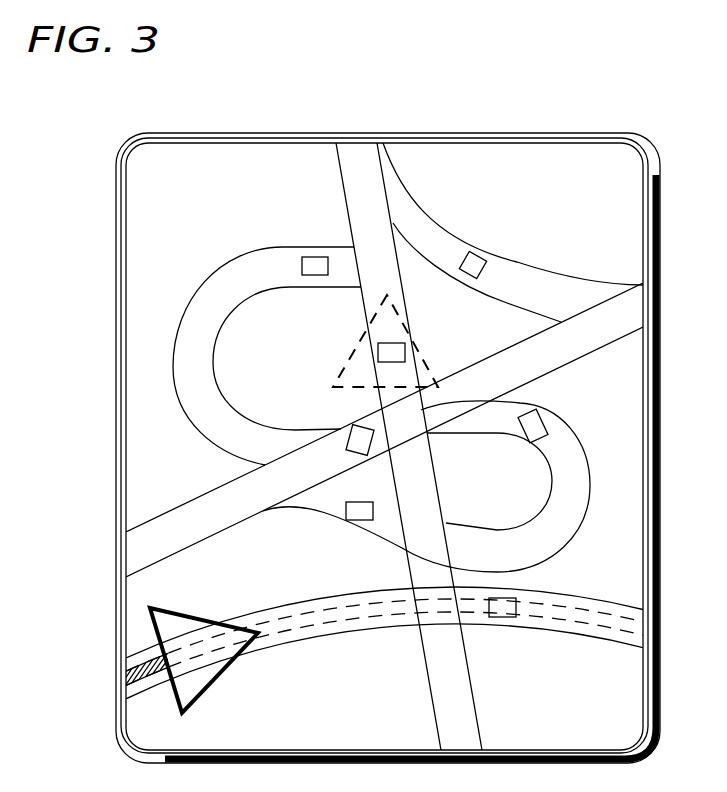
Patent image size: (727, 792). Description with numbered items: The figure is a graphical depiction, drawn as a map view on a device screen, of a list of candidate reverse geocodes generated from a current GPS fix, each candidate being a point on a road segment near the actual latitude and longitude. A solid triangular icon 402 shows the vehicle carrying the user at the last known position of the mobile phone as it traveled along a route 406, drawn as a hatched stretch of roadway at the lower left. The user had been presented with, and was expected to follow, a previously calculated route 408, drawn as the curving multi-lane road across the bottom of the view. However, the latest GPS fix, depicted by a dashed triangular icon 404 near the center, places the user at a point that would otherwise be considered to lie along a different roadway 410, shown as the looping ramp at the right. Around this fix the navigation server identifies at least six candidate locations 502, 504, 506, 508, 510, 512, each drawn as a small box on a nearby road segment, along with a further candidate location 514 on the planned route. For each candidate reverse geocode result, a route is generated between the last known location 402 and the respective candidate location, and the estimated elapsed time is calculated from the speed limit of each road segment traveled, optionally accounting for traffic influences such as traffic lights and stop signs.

The triangular icon 402 is at (153, 633).
The triangular icon 404 is at (418, 347).
The route 406 is at (140, 680).
The previously calculated route 408 is at (312, 628).
The different roadway 410 is at (437, 488).
The candidate location 502 is at (305, 266).
The candidate location 504 is at (480, 260).
The candidate location 506 is at (546, 421).
The candidate location 508 is at (355, 427).
The candidate location 510 is at (352, 519).
The candidate location 512 is at (378, 352).
The candidate location 514 is at (504, 618).